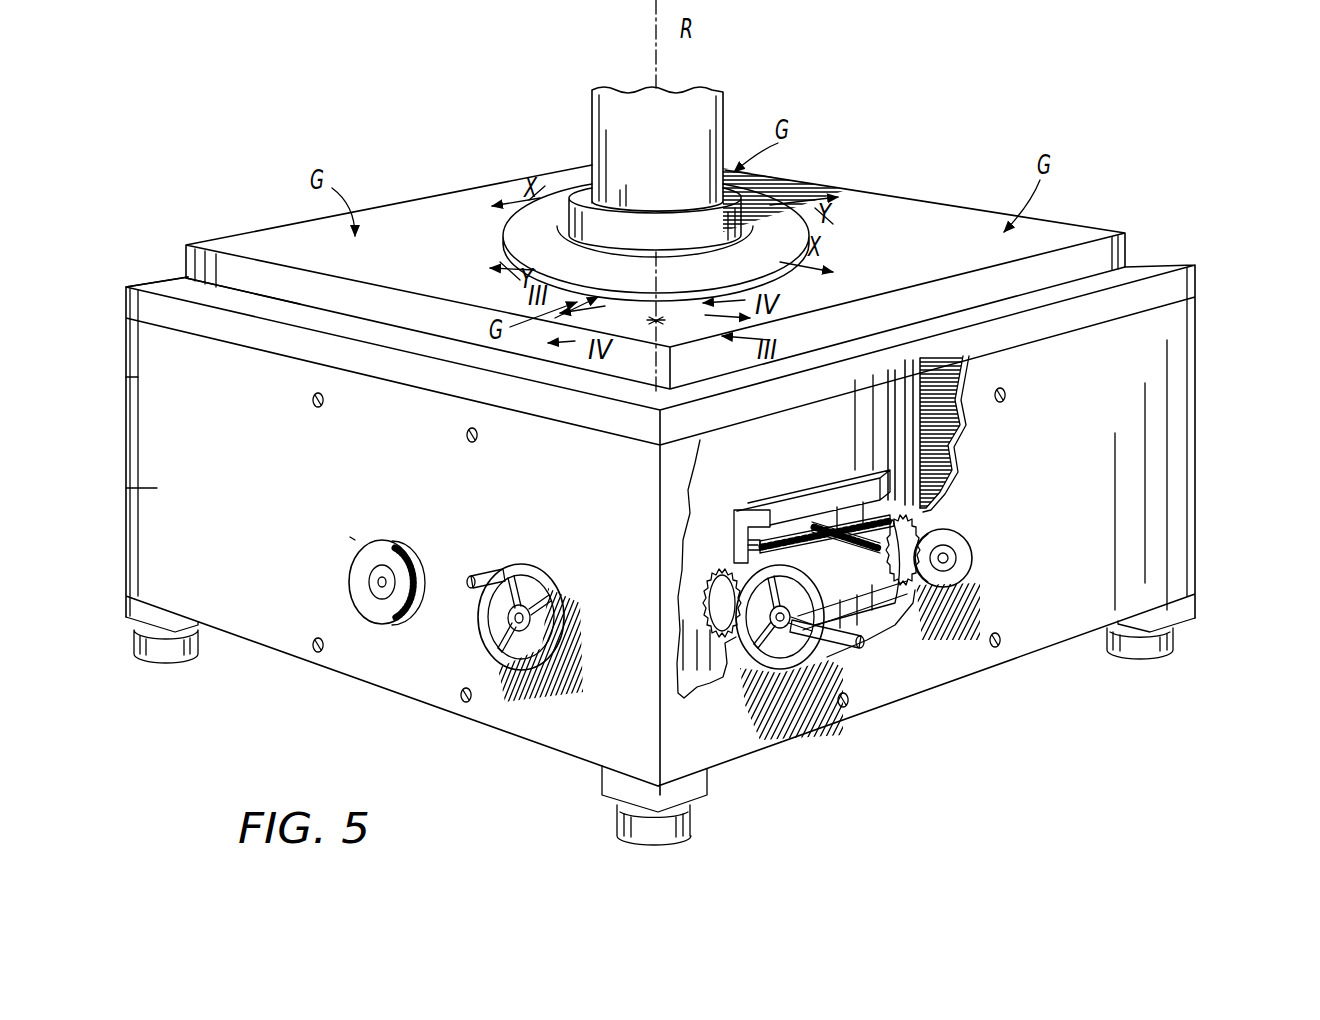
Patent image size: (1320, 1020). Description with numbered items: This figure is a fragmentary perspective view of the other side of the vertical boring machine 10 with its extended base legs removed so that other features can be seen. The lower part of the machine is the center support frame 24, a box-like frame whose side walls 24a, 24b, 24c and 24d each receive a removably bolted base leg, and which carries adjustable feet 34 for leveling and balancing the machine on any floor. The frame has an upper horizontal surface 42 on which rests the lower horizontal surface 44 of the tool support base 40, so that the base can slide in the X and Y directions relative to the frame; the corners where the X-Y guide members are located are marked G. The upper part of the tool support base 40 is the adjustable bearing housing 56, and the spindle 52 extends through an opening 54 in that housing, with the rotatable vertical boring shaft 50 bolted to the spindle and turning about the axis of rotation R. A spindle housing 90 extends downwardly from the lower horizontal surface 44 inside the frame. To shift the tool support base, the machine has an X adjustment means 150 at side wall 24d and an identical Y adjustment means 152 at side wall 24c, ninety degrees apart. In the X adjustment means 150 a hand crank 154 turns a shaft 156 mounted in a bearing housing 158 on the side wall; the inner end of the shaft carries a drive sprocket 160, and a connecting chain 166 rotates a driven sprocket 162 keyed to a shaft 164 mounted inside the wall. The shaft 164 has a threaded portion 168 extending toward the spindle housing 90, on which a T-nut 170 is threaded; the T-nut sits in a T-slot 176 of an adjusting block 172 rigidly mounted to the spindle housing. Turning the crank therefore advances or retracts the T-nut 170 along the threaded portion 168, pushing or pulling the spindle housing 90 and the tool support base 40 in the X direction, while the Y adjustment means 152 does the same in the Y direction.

The vertical boring machine 10 is at (1050, 128).
The center support frame 24 is at (1209, 356).
The side wall 24a is at (1150, 381).
The side wall 24b is at (193, 377).
The side wall 24c is at (157, 488).
The side wall 24d is at (1162, 455).
The adjustable feet 34 is at (136, 633).
The tool support base 40 is at (440, 196).
The upper horizontal surface 42 is at (173, 279).
The lower horizontal surface 44 is at (278, 300).
The vertical boring shaft 50 is at (727, 122).
The spindle 52 is at (572, 243).
The opening 54 is at (737, 233).
The adjustable bearing housing 56 is at (528, 206).
The spindle housing 90 is at (890, 444).
The X adjustment means 150 is at (906, 630).
The Y adjustment means 152 is at (408, 640).
The hand crank 154 is at (512, 666).
The shaft 156 is at (485, 624).
The bearing housing 158 is at (550, 610).
The drive sprocket 160 is at (715, 615).
The driven sprocket 162 is at (948, 540).
The shaft 164 is at (948, 559).
The connecting chain 166 is at (910, 602).
The threaded portion 168 is at (818, 524).
The T-nut 170 is at (795, 528).
The adjusting block 172 is at (743, 530).
The T-slot 176 is at (740, 543).